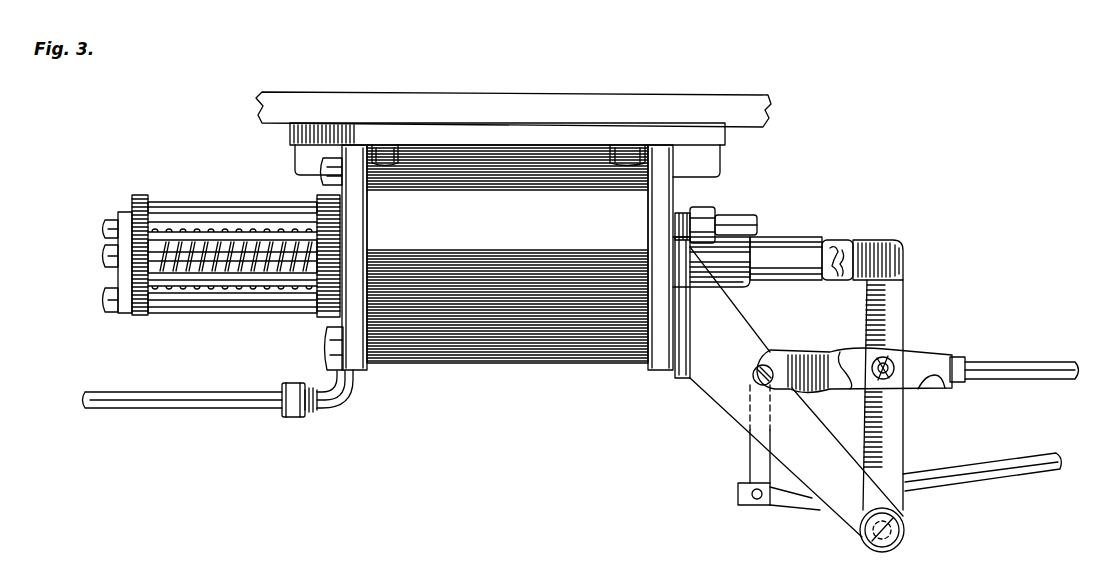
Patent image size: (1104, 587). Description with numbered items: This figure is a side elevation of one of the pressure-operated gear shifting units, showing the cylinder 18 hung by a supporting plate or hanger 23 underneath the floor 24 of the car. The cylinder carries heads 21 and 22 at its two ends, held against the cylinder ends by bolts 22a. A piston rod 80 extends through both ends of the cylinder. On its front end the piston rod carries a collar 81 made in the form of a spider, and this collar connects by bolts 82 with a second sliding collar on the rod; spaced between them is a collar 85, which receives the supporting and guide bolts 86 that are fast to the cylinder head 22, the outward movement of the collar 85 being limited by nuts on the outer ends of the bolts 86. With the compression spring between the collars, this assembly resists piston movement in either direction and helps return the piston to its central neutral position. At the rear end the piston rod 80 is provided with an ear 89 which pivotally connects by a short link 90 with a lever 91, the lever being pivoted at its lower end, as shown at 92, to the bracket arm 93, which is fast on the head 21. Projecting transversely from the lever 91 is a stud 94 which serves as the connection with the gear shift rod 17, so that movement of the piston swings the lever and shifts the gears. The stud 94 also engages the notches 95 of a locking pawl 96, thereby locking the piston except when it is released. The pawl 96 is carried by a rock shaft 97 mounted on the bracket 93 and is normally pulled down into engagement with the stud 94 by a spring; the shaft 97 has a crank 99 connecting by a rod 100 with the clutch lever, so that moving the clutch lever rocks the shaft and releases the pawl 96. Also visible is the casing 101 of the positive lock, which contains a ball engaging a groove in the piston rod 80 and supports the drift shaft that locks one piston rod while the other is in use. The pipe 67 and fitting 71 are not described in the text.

The gear shift rod 17 is at (1062, 370).
The cylinder 18 is at (578, 293).
The cylinder head 21 is at (640, 318).
The cylinder head 22 is at (362, 362).
The bolts 22a is at (493, 343).
The supporting plate or hanger 23 is at (712, 140).
The floor 24 is at (664, 101).
The pipe 67 is at (204, 398).
The pipe fitting 71 is at (748, 213).
The piston rod 80 is at (198, 252).
The collar 81 is at (118, 215).
The bolts 82 is at (234, 236).
The collar 85 is at (147, 201).
The supporting and guide bolts 86 is at (271, 208).
The ear 89 is at (838, 242).
The short link 90 is at (872, 242).
The lever 91 is at (903, 302).
The pivot 92 is at (888, 548).
The bracket arm 93 is at (842, 505).
The stud 94 is at (895, 366).
The notches 95 is at (833, 352).
The locking pawl 96 is at (910, 351).
The rock shaft 97 is at (766, 367).
The crank 99 is at (750, 453).
The rod 100 is at (1040, 462).
The casing 101 is at (742, 284).